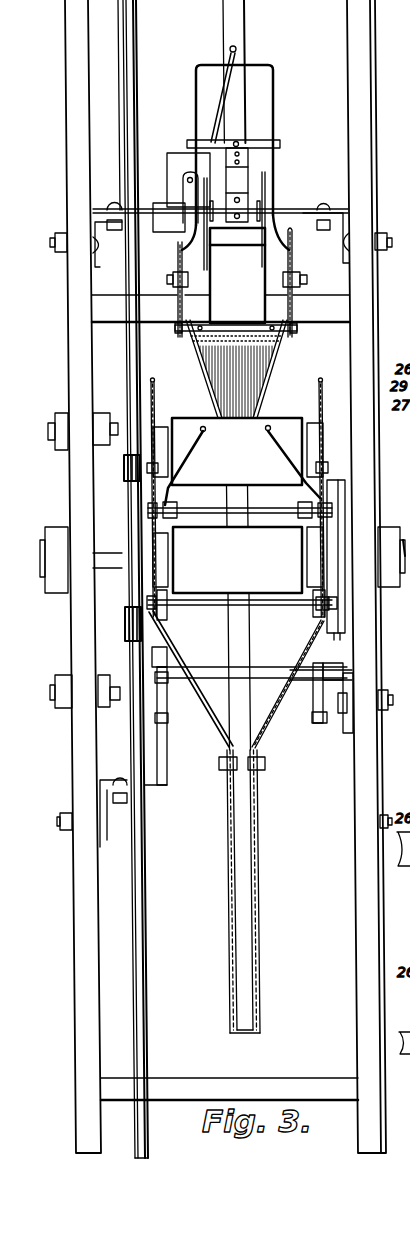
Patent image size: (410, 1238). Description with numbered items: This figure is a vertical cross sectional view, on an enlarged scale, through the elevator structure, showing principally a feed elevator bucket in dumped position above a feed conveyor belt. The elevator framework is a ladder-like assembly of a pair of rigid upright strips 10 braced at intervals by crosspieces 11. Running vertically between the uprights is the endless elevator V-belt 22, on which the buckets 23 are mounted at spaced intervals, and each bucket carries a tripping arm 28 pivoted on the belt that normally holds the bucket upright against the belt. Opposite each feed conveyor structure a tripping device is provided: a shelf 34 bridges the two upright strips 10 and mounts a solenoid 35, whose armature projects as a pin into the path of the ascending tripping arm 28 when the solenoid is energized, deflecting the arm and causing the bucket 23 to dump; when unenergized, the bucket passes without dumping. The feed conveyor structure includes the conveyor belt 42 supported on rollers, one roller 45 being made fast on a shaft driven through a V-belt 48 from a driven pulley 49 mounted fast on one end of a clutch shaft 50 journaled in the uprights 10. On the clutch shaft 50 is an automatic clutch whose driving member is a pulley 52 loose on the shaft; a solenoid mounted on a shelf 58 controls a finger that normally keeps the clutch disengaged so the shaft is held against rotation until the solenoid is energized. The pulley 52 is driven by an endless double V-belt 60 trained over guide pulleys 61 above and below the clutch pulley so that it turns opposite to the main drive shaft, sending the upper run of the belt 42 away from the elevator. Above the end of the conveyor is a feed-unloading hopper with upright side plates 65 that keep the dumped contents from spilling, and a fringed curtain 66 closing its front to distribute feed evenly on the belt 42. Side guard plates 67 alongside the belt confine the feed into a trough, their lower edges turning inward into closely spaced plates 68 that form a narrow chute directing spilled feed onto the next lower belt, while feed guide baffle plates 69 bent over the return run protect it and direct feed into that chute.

The upright strips 10 is at (80, 28).
The crosspieces 11 is at (328, 310).
The elevator V-belt 22 is at (233, 28).
The bucket 23 is at (260, 294).
The tripping arm 28 is at (281, 143).
The shelf 34 is at (297, 210).
The solenoid 35 is at (173, 163).
The conveyor belt 42 is at (203, 416).
The roller 45 is at (229, 582).
The V-belt 48 is at (345, 486).
The driven pulley 49 is at (345, 498).
The clutch shaft 50 is at (110, 560).
The clutch pulley 52 is at (117, 606).
The shelf 58 is at (210, 674).
The double V-belt 60 is at (137, 848).
The guide pulleys 61 is at (122, 393).
The side plates 65 is at (277, 83).
The fringed curtain 66 is at (247, 385).
The side guard plates 67 is at (163, 371).
The plates 68 is at (230, 883).
The feed guide baffle plates 69 is at (198, 447).